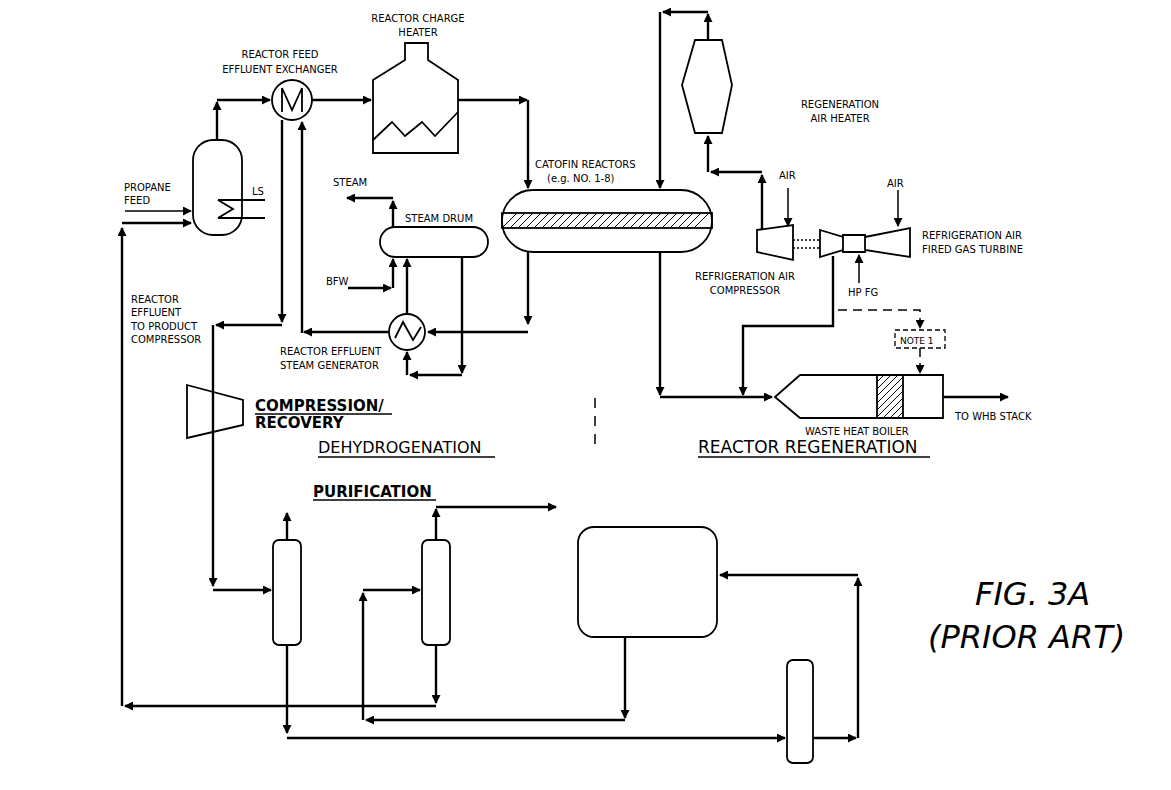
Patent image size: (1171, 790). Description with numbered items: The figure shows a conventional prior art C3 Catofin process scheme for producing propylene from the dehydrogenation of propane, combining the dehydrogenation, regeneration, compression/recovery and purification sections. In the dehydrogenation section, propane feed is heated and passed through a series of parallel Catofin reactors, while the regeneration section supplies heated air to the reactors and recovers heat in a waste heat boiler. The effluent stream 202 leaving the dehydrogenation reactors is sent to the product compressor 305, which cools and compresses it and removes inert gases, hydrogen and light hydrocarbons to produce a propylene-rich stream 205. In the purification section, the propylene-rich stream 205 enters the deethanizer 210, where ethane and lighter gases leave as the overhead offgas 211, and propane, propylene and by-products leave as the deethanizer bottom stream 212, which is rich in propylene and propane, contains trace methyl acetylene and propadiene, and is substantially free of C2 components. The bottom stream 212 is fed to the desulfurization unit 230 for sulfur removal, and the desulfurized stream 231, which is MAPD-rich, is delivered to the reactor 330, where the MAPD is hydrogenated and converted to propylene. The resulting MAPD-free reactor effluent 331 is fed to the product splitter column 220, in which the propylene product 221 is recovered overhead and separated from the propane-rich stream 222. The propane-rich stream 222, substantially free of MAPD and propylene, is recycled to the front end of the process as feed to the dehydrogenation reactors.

The effluent stream 202 is at (247, 355).
The product compressor 305 is at (215, 411).
The propylene-rich stream 205 is at (242, 514).
The deethanizer 210 is at (288, 592).
The overhead offgas 211 is at (313, 526).
The deethanizer bottom stream 212 is at (536, 691).
The product splitter column 220 is at (437, 592).
The propylene product 221 is at (496, 514).
The propane-rich stream 222 is at (279, 464).
The desulfurization unit 230 is at (802, 711).
The desulfurized stream 231 is at (789, 643).
The reactor 330 is at (647, 582).
The reactor effluent 331 is at (494, 655).